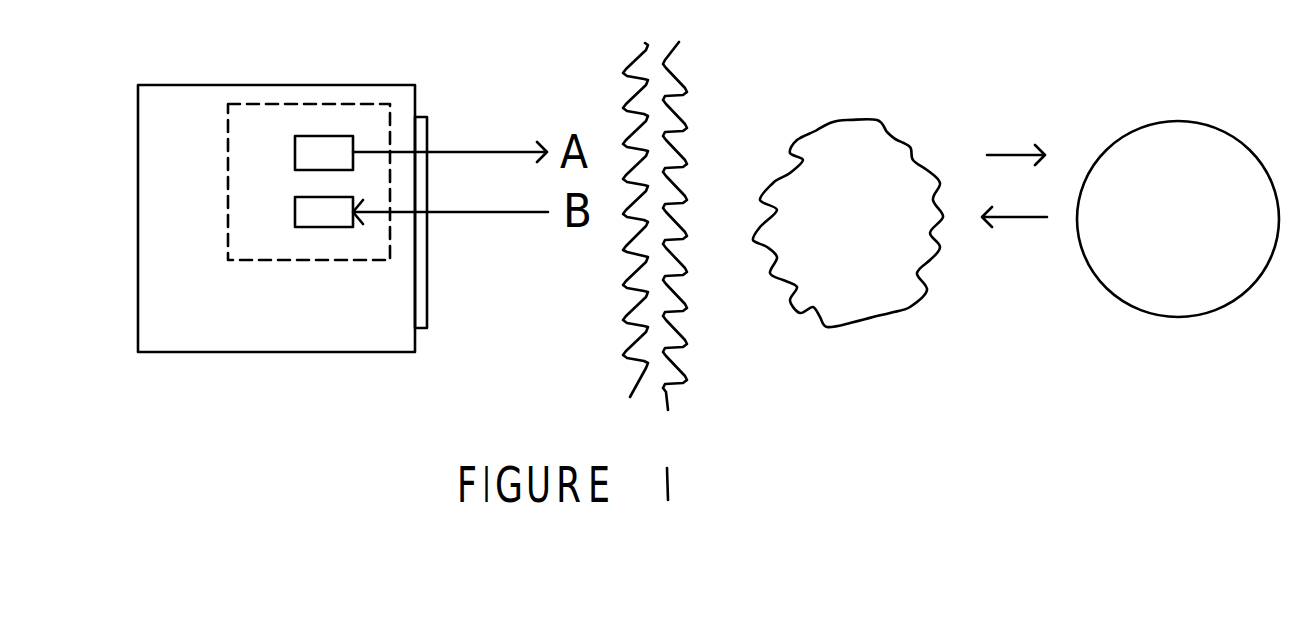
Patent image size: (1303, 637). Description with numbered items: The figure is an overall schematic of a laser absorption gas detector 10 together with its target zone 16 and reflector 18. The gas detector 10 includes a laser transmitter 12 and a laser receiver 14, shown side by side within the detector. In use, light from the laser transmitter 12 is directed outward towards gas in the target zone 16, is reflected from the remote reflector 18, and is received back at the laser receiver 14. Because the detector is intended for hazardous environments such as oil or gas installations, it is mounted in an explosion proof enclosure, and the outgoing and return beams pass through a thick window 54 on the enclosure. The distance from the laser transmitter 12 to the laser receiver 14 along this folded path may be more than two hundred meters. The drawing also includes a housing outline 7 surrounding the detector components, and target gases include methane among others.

The housing 7 is at (217, 353).
The gas detector 10 is at (273, 104).
The laser transmitter 12 is at (338, 136).
The laser receiver 14 is at (330, 228).
The window 54 is at (430, 130).
The target zone 16 is at (897, 140).
The reflector 18 is at (1163, 318).